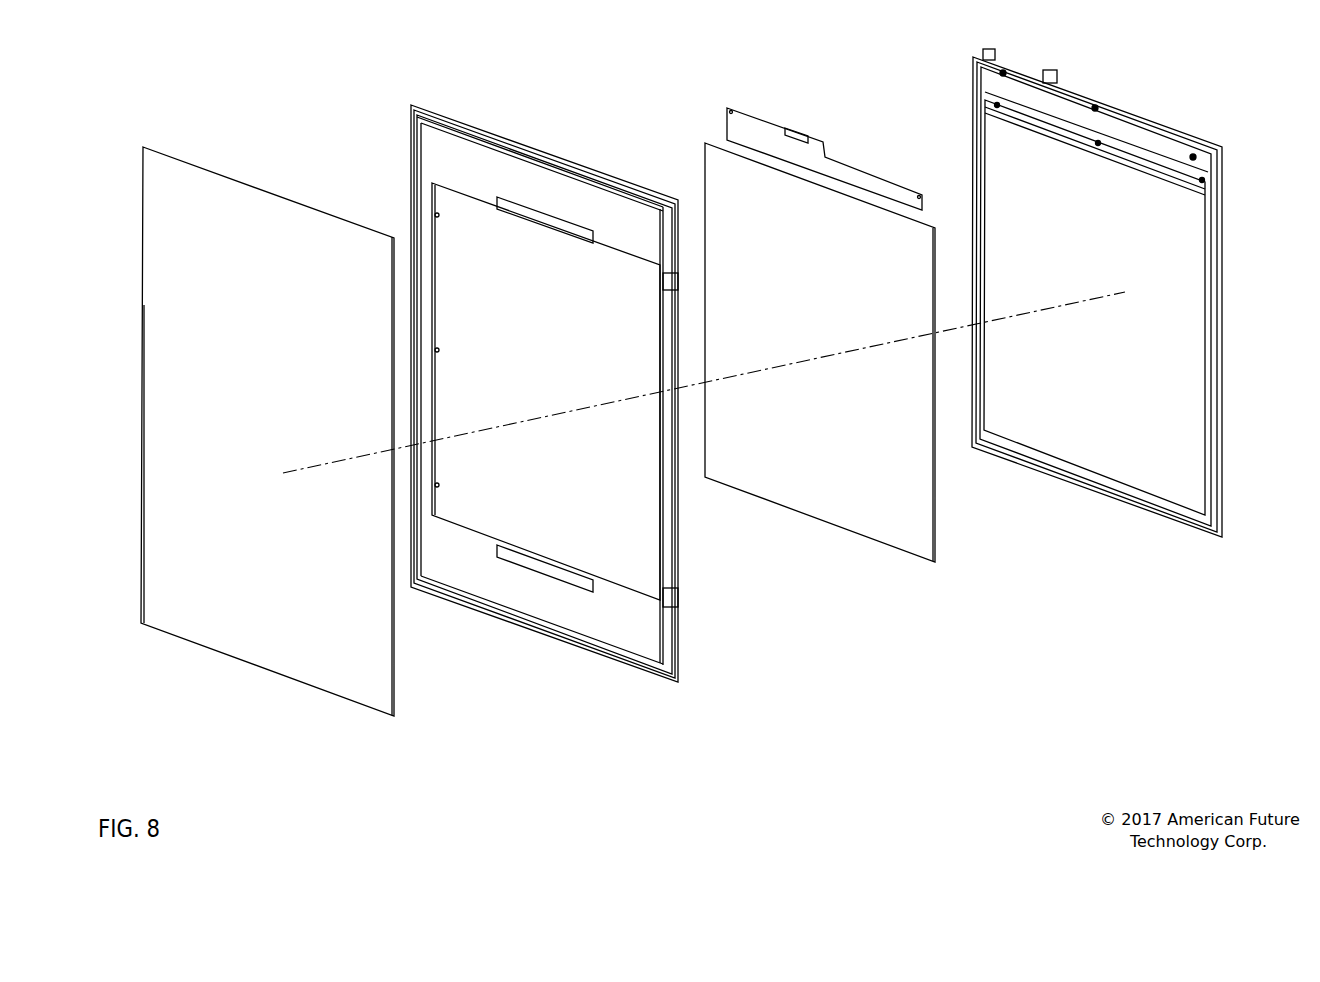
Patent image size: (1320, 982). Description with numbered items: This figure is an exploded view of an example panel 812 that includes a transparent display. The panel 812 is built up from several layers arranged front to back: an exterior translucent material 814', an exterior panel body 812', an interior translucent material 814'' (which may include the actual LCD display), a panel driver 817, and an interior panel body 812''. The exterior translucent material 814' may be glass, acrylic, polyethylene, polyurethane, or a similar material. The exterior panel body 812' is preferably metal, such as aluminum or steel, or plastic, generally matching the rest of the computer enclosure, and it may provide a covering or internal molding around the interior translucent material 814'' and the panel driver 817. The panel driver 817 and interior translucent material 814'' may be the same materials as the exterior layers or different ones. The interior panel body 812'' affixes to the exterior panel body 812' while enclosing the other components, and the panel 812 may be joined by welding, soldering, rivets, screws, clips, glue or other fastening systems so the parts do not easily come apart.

The panel 812 is at (704, 248).
The exterior panel body 812' is at (544, 393).
The interior panel body 812'' is at (1125, 293).
The exterior translucent material 814' is at (267, 431).
The interior translucent material 814'' is at (820, 355).
The panel driver 817 is at (770, 125).